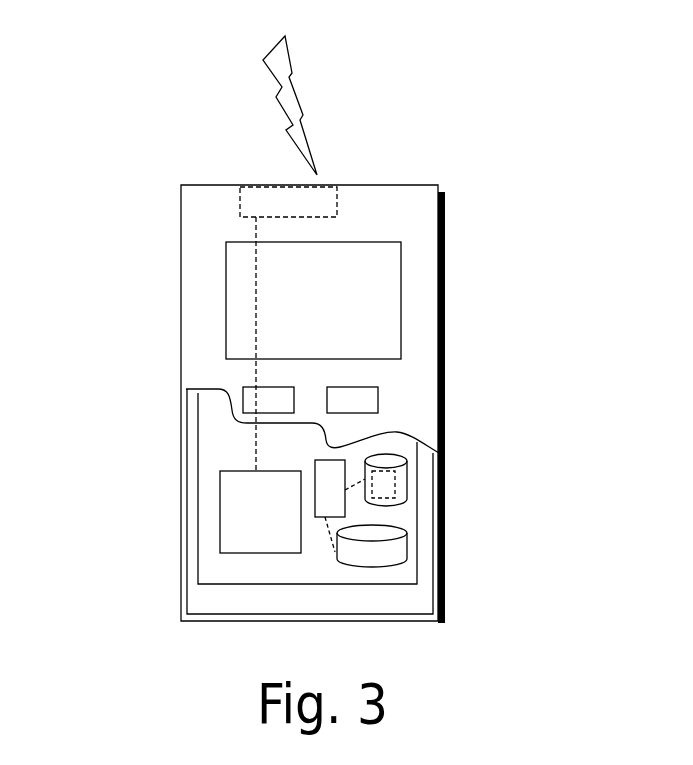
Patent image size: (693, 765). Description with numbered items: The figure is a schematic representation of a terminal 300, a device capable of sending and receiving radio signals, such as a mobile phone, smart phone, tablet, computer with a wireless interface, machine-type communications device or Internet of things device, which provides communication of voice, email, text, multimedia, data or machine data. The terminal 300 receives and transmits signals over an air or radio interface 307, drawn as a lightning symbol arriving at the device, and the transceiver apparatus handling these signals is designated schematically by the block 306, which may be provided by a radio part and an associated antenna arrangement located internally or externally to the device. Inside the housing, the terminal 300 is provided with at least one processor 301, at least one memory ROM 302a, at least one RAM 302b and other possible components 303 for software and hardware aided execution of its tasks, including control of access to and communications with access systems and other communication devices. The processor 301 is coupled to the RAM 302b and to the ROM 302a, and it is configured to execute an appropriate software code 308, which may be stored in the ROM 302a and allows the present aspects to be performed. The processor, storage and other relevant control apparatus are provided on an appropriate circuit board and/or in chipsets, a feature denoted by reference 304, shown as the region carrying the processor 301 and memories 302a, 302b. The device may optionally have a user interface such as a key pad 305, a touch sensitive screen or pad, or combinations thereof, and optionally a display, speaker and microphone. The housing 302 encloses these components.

The terminal 300 is at (181, 222).
The processor 301 is at (329, 477).
The circuit board 302 is at (220, 570).
The memory ROM 302a is at (408, 486).
The RAM 302b is at (377, 547).
The other possible components 303 is at (245, 399).
The circuit board 304 is at (227, 497).
The key pad 305 is at (240, 289).
The transceiver apparatus 306 is at (330, 197).
The air or radio interface 307 is at (315, 128).
The software code 308 is at (383, 482).